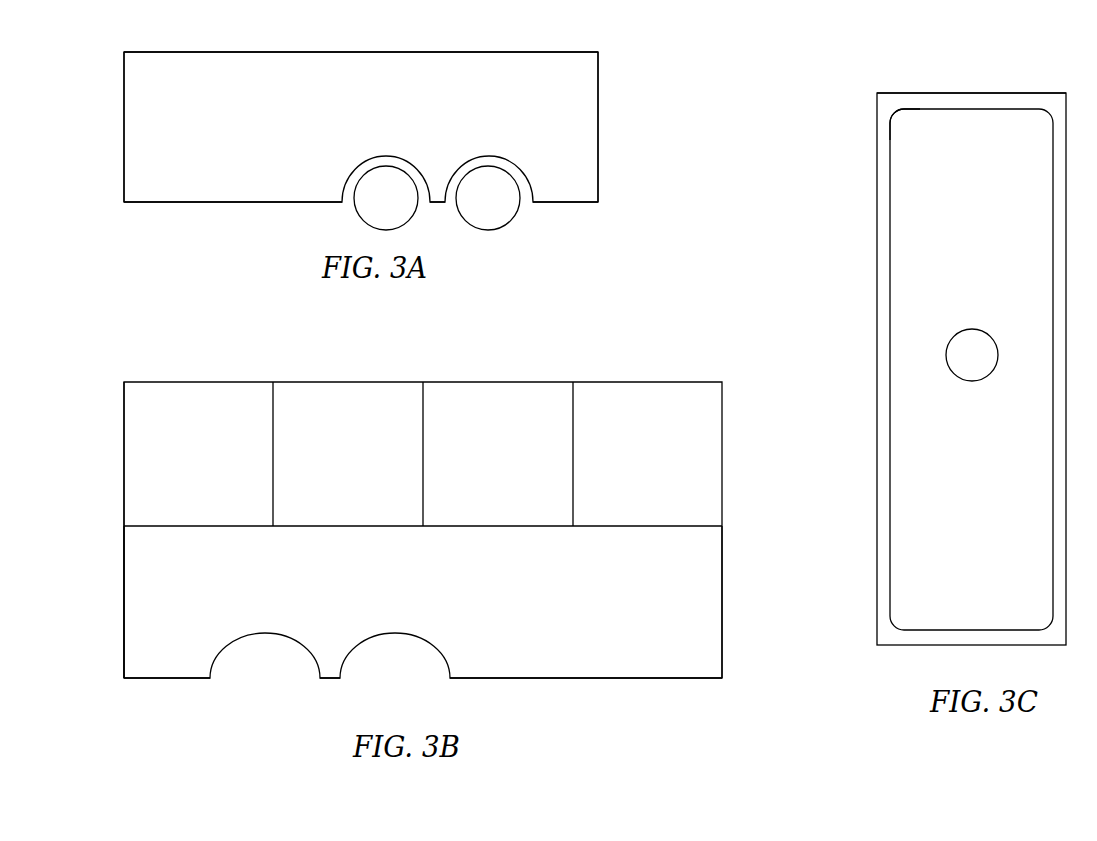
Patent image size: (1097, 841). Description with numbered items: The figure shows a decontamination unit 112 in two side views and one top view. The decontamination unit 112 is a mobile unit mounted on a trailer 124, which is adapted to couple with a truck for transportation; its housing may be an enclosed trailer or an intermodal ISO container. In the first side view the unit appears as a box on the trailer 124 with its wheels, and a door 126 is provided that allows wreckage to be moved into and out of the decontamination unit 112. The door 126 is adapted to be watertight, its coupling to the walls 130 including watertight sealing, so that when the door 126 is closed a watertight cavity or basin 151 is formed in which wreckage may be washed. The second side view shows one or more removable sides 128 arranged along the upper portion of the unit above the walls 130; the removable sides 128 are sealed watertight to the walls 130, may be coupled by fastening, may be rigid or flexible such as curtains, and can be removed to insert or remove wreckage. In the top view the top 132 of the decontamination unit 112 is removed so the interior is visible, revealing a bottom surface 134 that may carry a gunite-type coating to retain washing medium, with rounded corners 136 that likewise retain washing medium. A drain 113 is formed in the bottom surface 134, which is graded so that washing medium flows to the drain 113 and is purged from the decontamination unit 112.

In FIG. 3A, the decontamination unit 112 is at (91, 53).
In FIG. 3B, the decontamination unit 112 is at (687, 356).
In FIG. 3C, the decontamination unit 112 is at (862, 92).
In FIG. 3C, the drain 113 is at (972, 382).
In FIG. 3A, the trailer 124 is at (240, 204).
In FIG. 3B, the trailer 124 is at (637, 678).
In FIG. 3A, the door 126 is at (600, 95).
In FIG. 3B, the door 126 is at (122, 531).
In FIG. 3B, the removable sides 128 is at (692, 421).
In FIG. 3A, the walls 130 is at (122, 149).
In FIG. 3B, the walls 130 is at (685, 567).
In FIG. 3C, the walls 130 is at (993, 92).
In FIG. 3A, the top 132 is at (598, 52).
In FIG. 3C, the bottom surface 134 is at (932, 233).
In FIG. 3C, the rounded corners 136 is at (903, 117).
In FIG. 3C, the basin 151 is at (962, 212).